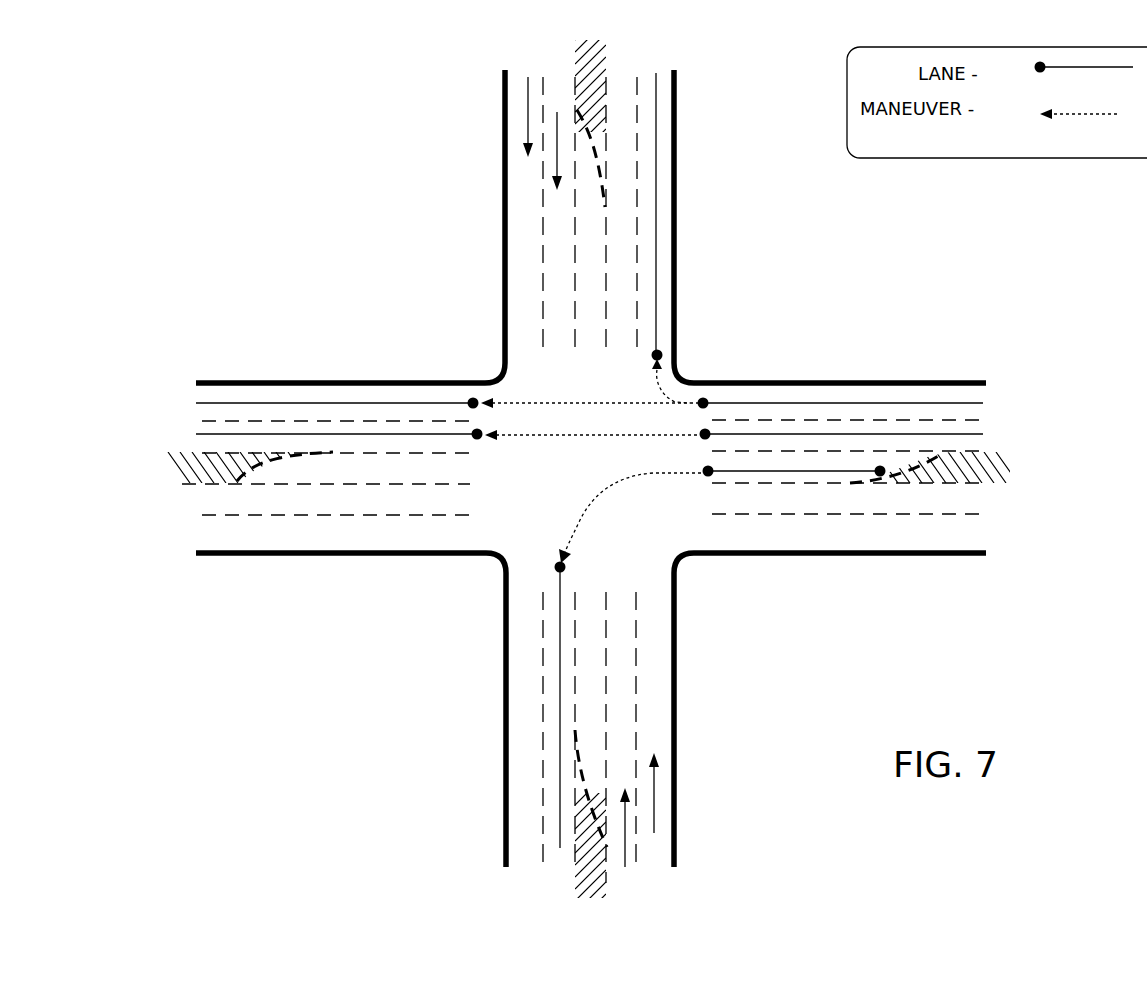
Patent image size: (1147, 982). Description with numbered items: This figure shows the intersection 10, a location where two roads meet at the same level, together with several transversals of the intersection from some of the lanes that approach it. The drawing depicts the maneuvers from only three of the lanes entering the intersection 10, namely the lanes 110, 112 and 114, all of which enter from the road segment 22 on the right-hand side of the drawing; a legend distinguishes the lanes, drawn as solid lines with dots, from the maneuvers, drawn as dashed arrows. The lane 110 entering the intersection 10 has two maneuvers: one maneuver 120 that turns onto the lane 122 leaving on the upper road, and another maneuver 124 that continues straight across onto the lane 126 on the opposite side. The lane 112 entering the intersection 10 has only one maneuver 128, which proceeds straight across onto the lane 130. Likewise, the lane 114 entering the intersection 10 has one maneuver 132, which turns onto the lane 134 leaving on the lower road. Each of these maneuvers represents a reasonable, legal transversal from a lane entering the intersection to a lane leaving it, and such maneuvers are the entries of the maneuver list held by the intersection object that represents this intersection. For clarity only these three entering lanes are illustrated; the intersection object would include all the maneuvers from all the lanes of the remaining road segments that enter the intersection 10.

The intersection 10 is at (410, 235).
The road segment 22 is at (1037, 618).
The lane 110 is at (867, 400).
The lane 112 is at (898, 432).
The lane 114 is at (762, 473).
The maneuver 120 is at (667, 395).
The lane 122 is at (656, 115).
The maneuver 124 is at (545, 398).
The lane 126 is at (428, 402).
The maneuver 128 is at (567, 440).
The lane 130 is at (397, 433).
The maneuver 132 is at (652, 498).
The lane 134 is at (552, 642).